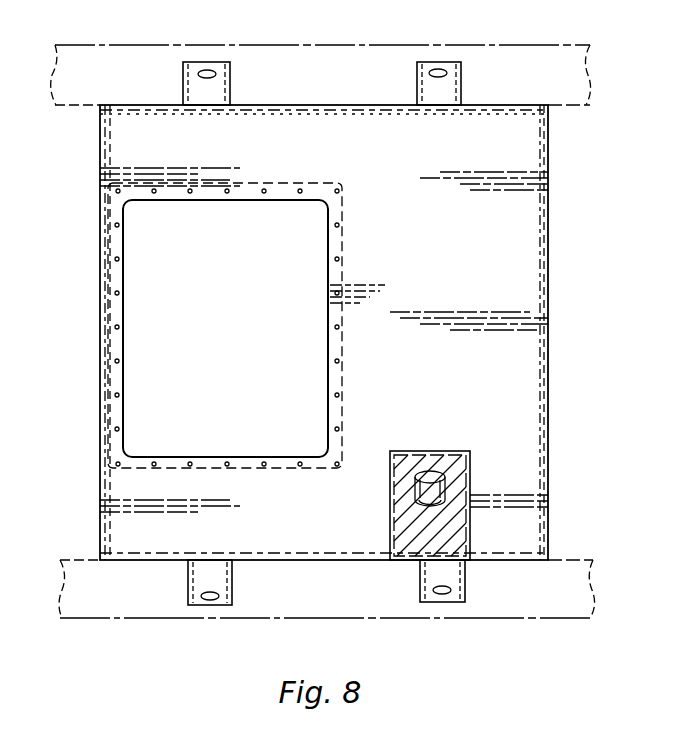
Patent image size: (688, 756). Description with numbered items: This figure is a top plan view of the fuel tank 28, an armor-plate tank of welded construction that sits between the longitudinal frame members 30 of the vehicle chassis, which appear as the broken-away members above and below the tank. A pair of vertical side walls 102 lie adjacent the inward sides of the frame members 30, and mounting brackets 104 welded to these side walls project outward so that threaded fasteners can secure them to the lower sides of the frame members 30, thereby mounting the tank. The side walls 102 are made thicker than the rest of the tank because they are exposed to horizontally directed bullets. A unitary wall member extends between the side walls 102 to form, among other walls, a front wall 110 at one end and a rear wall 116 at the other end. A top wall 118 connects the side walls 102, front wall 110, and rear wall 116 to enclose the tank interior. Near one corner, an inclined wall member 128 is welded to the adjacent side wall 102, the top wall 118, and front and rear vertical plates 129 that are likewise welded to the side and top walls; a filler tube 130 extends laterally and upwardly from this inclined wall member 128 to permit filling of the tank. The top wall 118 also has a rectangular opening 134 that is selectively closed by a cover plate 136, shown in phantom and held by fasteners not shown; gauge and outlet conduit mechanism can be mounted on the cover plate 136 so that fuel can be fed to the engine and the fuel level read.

The fuel tank 28 is at (578, 472).
The longitudinal frame members 30 is at (78, 107).
The vertical side walls 102 is at (280, 108).
The mounting brackets 104 is at (212, 93).
The front wall 110 is at (102, 393).
The rear wall 116 is at (548, 237).
The top wall 118 is at (154, 135).
The inclined wall member 128 is at (455, 490).
The front and rear vertical plates 129 is at (470, 502).
The filler tube 130 is at (425, 480).
The rectangular opening 134 is at (120, 292).
The cover plate 136 is at (232, 182).